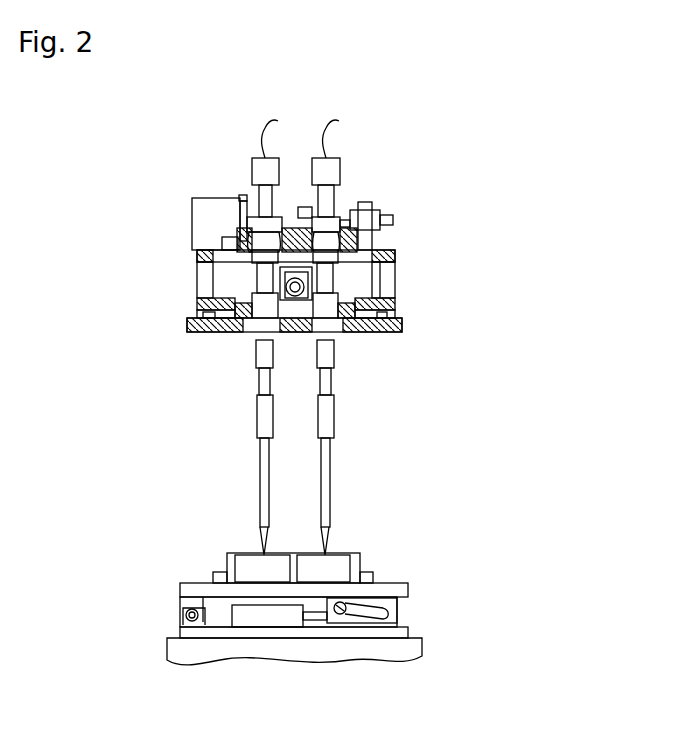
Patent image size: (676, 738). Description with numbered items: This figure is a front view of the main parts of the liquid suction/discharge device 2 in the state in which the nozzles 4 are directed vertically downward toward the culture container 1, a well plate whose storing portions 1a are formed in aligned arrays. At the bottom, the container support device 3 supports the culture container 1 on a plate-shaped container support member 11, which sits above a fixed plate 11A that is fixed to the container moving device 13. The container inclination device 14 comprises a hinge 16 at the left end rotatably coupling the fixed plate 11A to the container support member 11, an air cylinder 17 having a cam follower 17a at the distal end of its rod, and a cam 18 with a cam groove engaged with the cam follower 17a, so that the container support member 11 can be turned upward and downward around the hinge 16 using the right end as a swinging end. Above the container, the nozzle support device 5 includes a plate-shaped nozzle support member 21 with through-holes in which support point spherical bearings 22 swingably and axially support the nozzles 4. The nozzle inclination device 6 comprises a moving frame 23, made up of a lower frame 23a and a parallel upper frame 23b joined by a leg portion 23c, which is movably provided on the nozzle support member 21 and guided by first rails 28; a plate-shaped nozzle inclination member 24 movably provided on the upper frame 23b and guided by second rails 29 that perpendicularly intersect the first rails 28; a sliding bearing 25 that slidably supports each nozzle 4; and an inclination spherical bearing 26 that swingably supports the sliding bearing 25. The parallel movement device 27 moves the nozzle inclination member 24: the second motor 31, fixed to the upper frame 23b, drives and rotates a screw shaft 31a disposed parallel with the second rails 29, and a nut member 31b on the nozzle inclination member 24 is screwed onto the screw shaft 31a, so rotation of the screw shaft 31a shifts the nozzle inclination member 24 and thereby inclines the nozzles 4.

The liquid suction/discharge device 2 is at (457, 175).
The inclination spherical bearing 26 is at (268, 240).
The sliding bearing 25 is at (247, 225).
The nozzle inclination member 24 is at (243, 255).
The second rails 29 is at (373, 247).
The nozzle inclination device 6 is at (275, 191).
The second motor 31 is at (200, 218).
The parallel movement device 27 is at (205, 198).
The screw shaft 31a is at (388, 214).
The nut member 31b is at (363, 203).
The moving frame 23 is at (263, 297).
The lower frame 23a is at (190, 302).
The upper frame 23b is at (197, 247).
The leg portion 23c is at (200, 262).
The support point spherical bearing 22 is at (268, 318).
The nozzle support device 5 is at (293, 354).
The nozzle support member 21 is at (188, 328).
The first rails 28 is at (210, 318).
The nozzle 4 is at (264, 417).
The culture container 1 is at (298, 538).
The storing portion 1a is at (245, 553).
The container support member 11 is at (410, 583).
The fixed plate 11A is at (405, 630).
The container inclination device 14 is at (248, 652).
The hinge 16 is at (180, 612).
The air cylinder 17 is at (277, 617).
The cam follower 17a is at (345, 615).
The cam 18 is at (368, 627).
The container moving device 13 is at (173, 648).
The container support device 3 is at (295, 608).